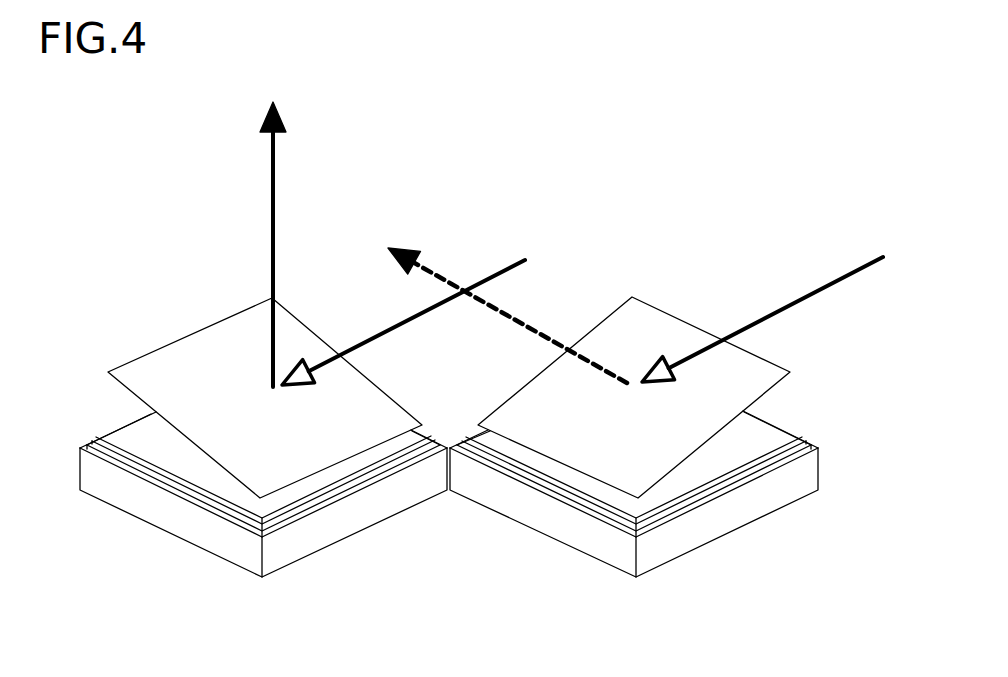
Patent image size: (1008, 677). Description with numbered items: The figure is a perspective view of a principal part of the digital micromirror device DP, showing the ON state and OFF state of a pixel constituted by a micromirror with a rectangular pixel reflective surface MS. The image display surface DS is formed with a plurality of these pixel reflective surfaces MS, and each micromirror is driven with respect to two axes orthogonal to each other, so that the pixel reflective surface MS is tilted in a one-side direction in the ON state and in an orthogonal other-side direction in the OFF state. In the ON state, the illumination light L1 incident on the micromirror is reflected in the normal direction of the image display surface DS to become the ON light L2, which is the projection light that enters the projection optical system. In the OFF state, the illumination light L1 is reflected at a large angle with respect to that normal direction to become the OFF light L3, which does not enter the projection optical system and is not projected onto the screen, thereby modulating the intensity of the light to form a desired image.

The image display surface DS is at (705, 202).
The digital micromirror device DP is at (468, 561).
The pixel reflective surface MS is at (282, 437).
The illumination light L1 is at (503, 265).
The ON light L2 is at (272, 210).
The OFF light L3 is at (540, 337).